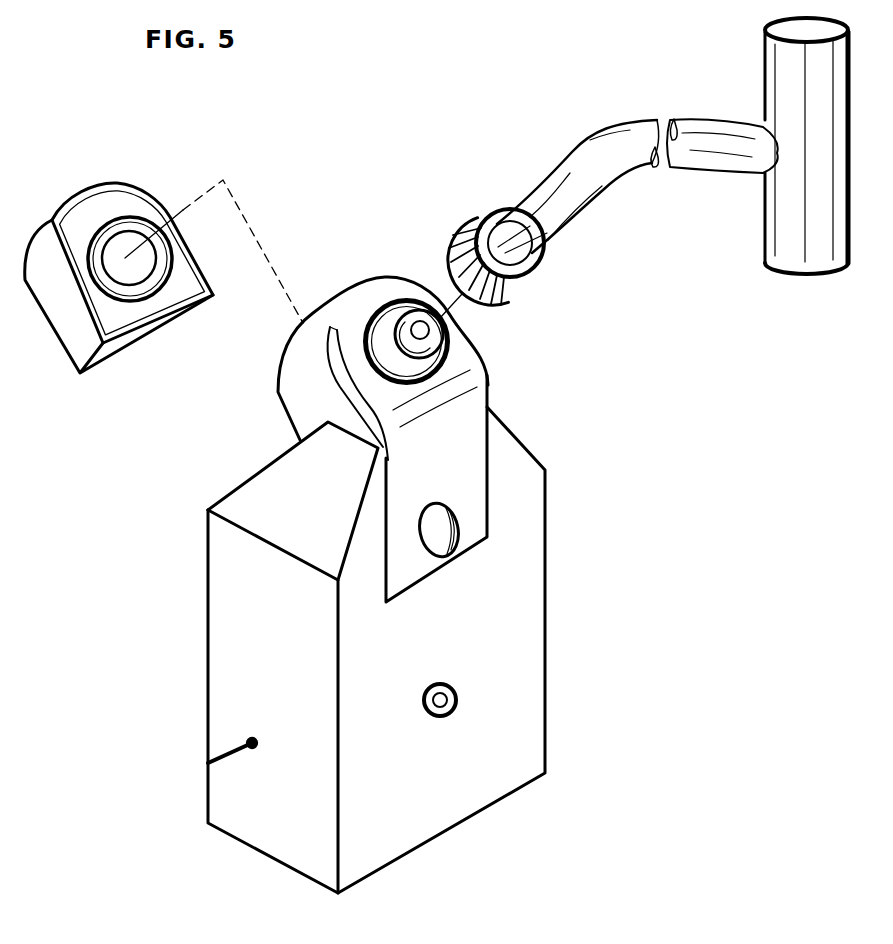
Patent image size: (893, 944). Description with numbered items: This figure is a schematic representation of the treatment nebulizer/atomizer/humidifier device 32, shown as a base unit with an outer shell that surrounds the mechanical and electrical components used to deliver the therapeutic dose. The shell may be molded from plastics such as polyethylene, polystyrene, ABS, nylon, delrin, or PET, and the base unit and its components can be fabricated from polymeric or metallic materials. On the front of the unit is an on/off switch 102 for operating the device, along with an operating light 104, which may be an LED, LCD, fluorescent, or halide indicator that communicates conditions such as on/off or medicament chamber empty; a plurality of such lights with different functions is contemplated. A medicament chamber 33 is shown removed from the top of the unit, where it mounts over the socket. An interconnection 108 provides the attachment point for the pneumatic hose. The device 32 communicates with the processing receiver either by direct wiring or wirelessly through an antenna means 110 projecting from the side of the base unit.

The treatment nebulizer/atomizer/humidifier device 32 is at (556, 835).
The medicament chamber 33 is at (83, 190).
The on/off switch 102 is at (454, 530).
The operating light 104 is at (457, 707).
The interconnection 108 is at (787, 87).
The antenna means 110 is at (207, 767).